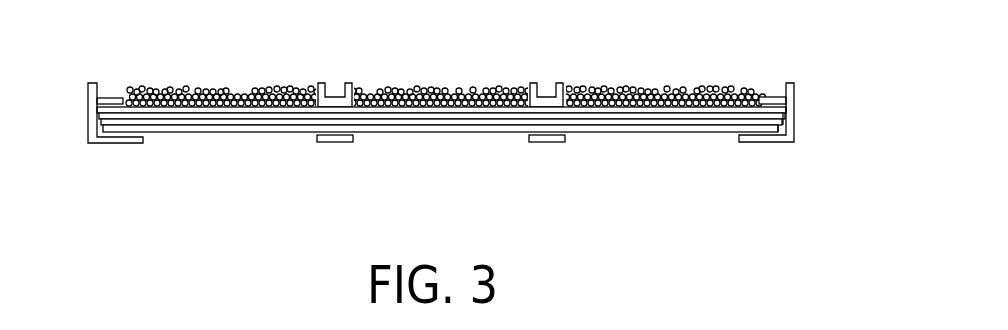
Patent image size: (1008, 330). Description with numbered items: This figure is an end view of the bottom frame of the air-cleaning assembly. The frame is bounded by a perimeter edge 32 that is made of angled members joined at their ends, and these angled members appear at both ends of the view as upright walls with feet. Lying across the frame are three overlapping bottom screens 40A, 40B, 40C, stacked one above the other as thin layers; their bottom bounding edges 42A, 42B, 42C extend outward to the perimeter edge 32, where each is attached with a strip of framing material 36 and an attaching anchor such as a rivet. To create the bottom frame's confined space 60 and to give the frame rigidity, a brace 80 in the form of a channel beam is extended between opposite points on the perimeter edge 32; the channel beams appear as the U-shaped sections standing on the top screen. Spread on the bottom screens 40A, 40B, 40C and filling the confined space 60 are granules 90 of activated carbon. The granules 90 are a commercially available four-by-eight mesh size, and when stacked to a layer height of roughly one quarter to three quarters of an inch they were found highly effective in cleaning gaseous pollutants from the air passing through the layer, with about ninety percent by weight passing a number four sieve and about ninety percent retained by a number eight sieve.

The perimeter edge 32 is at (88, 97).
The strip of framing material 36 is at (107, 97).
The bottom screen 40A is at (491, 111).
The bottom screen 40B is at (427, 118).
The bottom screen 40C is at (242, 130).
The bottom bounding edge 42A is at (788, 112).
The bottom bounding edge 42B is at (783, 119).
The bottom bounding edge 42C is at (778, 128).
The confined space 60 is at (294, 86).
The brace 80 is at (560, 82).
The granules 90 is at (681, 98).